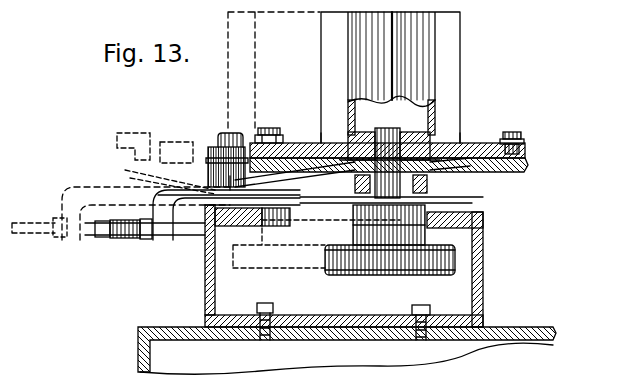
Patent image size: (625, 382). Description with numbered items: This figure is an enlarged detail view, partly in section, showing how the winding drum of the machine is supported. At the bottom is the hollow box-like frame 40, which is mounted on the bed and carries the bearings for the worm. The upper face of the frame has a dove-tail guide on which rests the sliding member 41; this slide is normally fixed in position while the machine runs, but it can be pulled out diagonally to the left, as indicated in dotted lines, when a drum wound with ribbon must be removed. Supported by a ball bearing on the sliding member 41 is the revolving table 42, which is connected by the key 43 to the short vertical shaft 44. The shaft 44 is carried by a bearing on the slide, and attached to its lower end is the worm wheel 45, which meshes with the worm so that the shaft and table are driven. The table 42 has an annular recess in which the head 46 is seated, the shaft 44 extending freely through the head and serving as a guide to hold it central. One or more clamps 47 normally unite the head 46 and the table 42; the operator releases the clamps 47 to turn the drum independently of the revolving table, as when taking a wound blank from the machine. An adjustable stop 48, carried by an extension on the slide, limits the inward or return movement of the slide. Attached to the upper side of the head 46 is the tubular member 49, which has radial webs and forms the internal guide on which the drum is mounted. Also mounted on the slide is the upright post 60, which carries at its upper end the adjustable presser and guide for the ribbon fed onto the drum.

The hollow box-like frame 40 is at (485, 295).
The sliding member 41 is at (320, 231).
The revolving table 42 is at (500, 165).
The key 43 is at (452, 164).
The short vertical shaft 44 is at (400, 134).
The worm wheel 45 is at (282, 272).
The head 46 is at (472, 144).
The clamps 47 is at (268, 128).
The adjustable stop 48 is at (39, 237).
The tubular member 49 is at (431, 60).
The upright post 60 is at (228, 131).